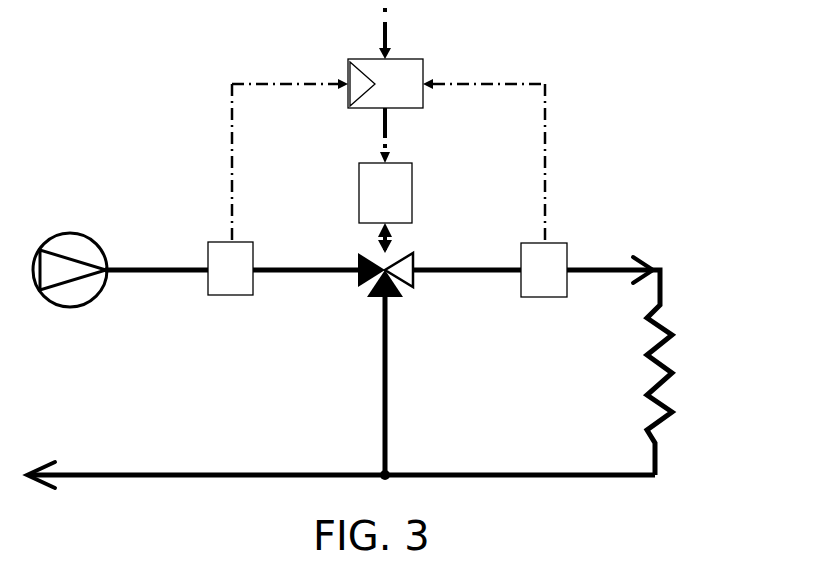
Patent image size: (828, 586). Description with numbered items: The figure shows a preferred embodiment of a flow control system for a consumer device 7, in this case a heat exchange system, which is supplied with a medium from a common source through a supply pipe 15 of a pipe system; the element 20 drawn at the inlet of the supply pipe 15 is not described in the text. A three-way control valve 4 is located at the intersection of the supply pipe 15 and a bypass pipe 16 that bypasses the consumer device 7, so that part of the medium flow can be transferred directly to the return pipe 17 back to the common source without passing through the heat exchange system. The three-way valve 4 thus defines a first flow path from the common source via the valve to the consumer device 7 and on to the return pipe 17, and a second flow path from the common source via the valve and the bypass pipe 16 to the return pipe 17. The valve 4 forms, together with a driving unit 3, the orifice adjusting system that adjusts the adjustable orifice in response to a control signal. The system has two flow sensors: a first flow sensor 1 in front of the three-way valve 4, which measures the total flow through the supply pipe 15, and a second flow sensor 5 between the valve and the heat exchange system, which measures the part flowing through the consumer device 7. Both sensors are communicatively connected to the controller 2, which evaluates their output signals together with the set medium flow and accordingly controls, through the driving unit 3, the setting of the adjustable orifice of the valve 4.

The flow sensor 1 is at (230, 189).
The controller 2 is at (388, 58).
The driving unit 3 is at (385, 180).
The three-way control valve 4 is at (402, 284).
The second flow sensor 5 is at (544, 190).
The consumer device 7 is at (665, 393).
The supply pipe 15 is at (145, 268).
The bypass pipe 16 is at (385, 388).
The return pipe 17 is at (187, 478).
The pump 20 is at (70, 270).